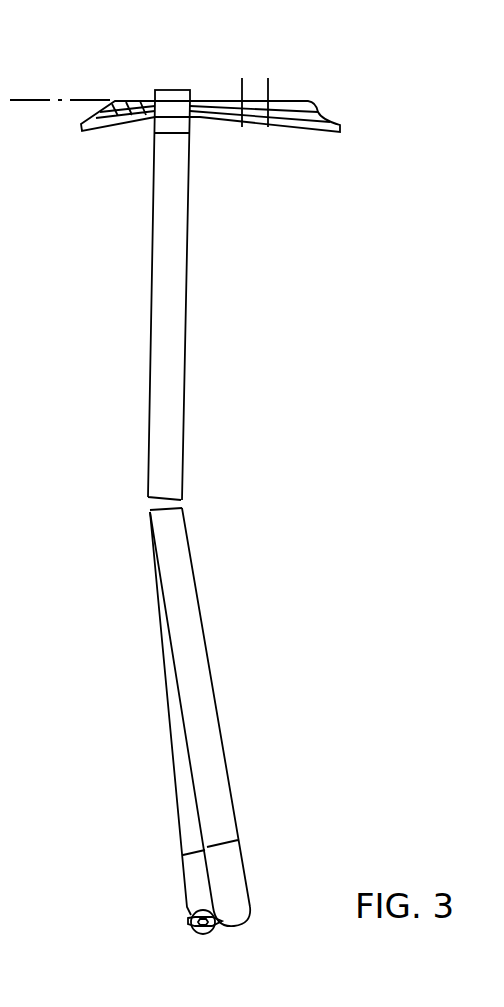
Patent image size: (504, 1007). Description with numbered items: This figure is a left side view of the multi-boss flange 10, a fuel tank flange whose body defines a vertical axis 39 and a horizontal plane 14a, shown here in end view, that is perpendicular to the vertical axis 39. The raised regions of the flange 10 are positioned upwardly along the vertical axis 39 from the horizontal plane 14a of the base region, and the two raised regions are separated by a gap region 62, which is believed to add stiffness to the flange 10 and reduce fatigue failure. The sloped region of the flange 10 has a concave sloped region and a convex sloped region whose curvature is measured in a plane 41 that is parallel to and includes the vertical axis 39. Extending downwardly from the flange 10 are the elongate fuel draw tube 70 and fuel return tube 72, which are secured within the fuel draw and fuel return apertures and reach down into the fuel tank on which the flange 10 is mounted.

The multi-boss flange 10 is at (340, 127).
The gap region 62 is at (217, 98).
The horizontal plane 14a is at (28, 103).
The vertical axis 39 is at (235, 136).
The plane 41 is at (268, 137).
The fuel draw tube 70 is at (198, 662).
The fuel return tube 72 is at (192, 808).